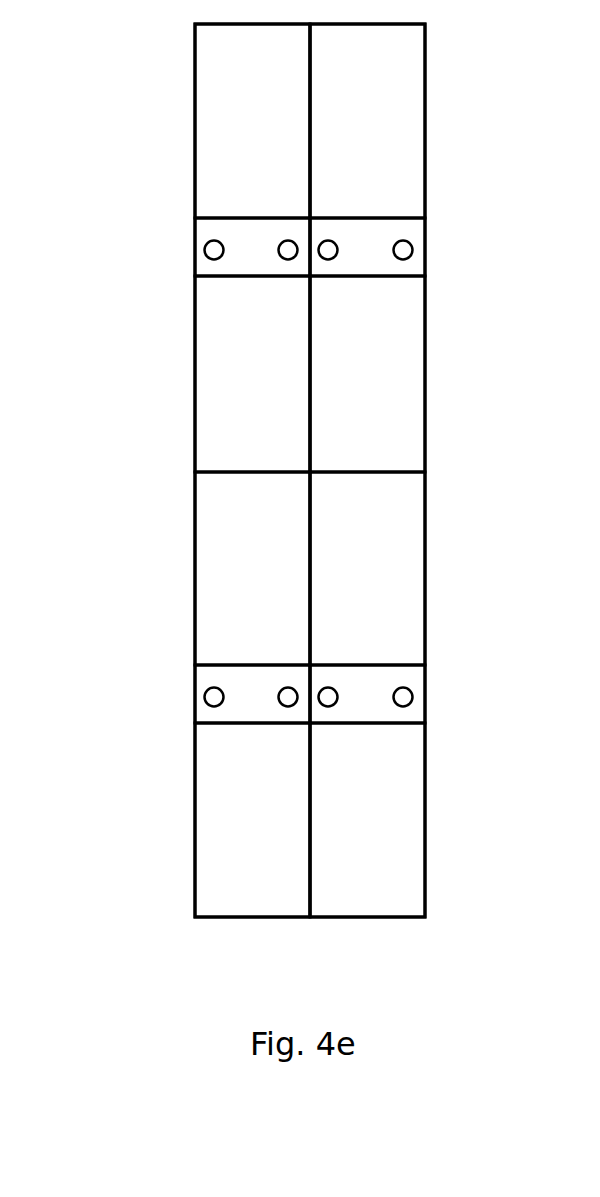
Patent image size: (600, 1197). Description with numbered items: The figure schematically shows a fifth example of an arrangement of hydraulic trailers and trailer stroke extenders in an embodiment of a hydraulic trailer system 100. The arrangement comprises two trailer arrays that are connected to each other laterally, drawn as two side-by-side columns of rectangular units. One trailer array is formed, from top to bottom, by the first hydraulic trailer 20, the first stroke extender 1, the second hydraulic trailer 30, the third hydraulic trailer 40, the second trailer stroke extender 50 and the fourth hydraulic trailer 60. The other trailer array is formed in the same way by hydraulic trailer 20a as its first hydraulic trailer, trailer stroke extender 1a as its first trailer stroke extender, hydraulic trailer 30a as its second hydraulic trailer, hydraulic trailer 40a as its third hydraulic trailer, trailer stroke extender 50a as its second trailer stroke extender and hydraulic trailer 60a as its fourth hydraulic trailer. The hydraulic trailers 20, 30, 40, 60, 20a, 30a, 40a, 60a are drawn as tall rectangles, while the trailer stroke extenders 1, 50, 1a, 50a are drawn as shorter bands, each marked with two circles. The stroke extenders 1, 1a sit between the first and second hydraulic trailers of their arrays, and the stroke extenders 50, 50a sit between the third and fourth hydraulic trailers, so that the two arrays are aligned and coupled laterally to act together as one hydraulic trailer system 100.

The modular panel assembly 100 is at (132, 356).
The first hydraulic trailer 20 is at (232, 143).
The hydraulic trailer 20a is at (385, 143).
The first stroke extender 1 is at (218, 266).
The trailer stroke extender 1a is at (408, 231).
The second hydraulic trailer 30 is at (222, 416).
The hydraulic trailer 30a is at (393, 388).
The third hydraulic trailer 40 is at (232, 590).
The hydraulic trailer 40a is at (400, 575).
The second trailer stroke extender 50 is at (218, 712).
The trailer stroke extender 50a is at (412, 680).
The fourth hydraulic trailer 60 is at (218, 862).
The hydraulic trailer 60a is at (393, 853).